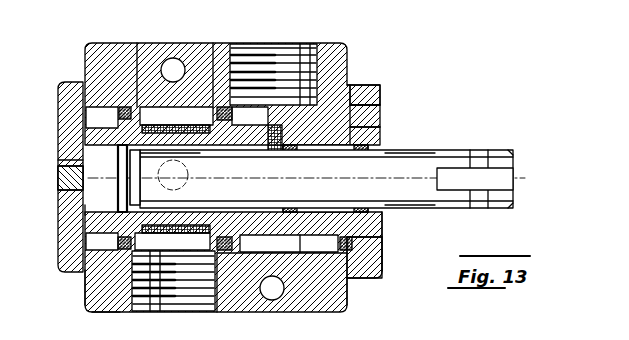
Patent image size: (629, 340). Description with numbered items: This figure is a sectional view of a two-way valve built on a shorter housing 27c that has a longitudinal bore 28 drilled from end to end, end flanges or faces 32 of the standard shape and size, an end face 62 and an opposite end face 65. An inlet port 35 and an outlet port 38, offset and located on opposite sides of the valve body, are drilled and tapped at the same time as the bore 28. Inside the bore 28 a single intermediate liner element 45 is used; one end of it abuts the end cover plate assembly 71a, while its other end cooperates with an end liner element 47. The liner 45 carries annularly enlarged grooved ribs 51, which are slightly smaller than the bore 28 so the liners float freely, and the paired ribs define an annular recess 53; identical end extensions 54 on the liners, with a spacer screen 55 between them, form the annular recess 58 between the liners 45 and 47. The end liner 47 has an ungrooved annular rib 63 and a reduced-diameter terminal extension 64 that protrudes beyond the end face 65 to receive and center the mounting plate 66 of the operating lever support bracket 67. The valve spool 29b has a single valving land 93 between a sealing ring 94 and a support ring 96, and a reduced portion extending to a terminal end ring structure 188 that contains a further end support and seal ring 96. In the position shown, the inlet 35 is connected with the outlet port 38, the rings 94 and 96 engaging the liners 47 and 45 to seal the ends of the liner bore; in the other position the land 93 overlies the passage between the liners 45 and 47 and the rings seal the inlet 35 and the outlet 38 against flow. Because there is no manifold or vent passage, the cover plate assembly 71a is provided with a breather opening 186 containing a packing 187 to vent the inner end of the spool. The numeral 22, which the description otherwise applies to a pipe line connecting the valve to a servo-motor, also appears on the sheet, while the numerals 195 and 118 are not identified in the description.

The pipe line 22 is at (117, 38).
The end cover plate assembly 71a is at (70, 80).
The packing 187 is at (58, 181).
The breather opening 186 is at (58, 168).
The annularly enlarged rib 51 is at (138, 105).
The bolt hole 195 is at (173, 58).
The outlet port 38 is at (298, 50).
The inlet port 35 is at (152, 300).
The annular recess 53 is at (160, 112).
The end extension 54 is at (278, 112).
The valving land 93 is at (338, 188).
The sealing ring 94 is at (270, 165).
The valve spool 29b is at (430, 150).
The yoke slot 118 is at (500, 190).
The support ring 96 is at (381, 153).
The intermediate liner element 45 is at (118, 150).
The terminal end ring structure 188 is at (130, 176).
The annular recess 58 is at (350, 82).
The end face 65 is at (360, 92).
The annular rib 63 is at (380, 106).
The terminal extension 64 is at (380, 130).
The end liner element 47 is at (382, 225).
The operating lever support bracket 67 is at (388, 269).
The mounting plate 66 is at (373, 278).
The end flange 32 is at (355, 288).
The housing 27c is at (88, 305).
The bore 28 is at (243, 250).
The spacer screen 55 is at (300, 240).
The end face 62 is at (78, 211).